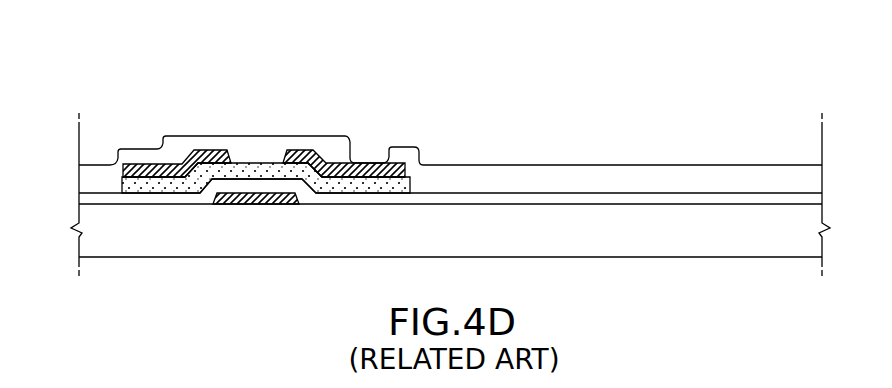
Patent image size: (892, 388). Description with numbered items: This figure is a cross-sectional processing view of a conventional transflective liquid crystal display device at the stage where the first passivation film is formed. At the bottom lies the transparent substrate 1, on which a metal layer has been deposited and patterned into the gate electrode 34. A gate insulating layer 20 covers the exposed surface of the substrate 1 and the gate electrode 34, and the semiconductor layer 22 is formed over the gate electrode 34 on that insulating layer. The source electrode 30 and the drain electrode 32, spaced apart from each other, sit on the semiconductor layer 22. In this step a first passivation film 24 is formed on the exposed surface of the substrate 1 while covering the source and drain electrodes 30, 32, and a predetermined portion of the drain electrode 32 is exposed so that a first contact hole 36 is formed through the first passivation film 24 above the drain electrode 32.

The transparent substrate 1 is at (460, 237).
The gate insulating layer 20 is at (276, 163).
The semiconductor layer 22 is at (368, 163).
The first passivation film 24 is at (212, 136).
The source electrode 30 is at (181, 151).
The drain electrode 32 is at (321, 151).
The gate electrode 34 is at (247, 193).
The first contact hole 36 is at (266, 132).